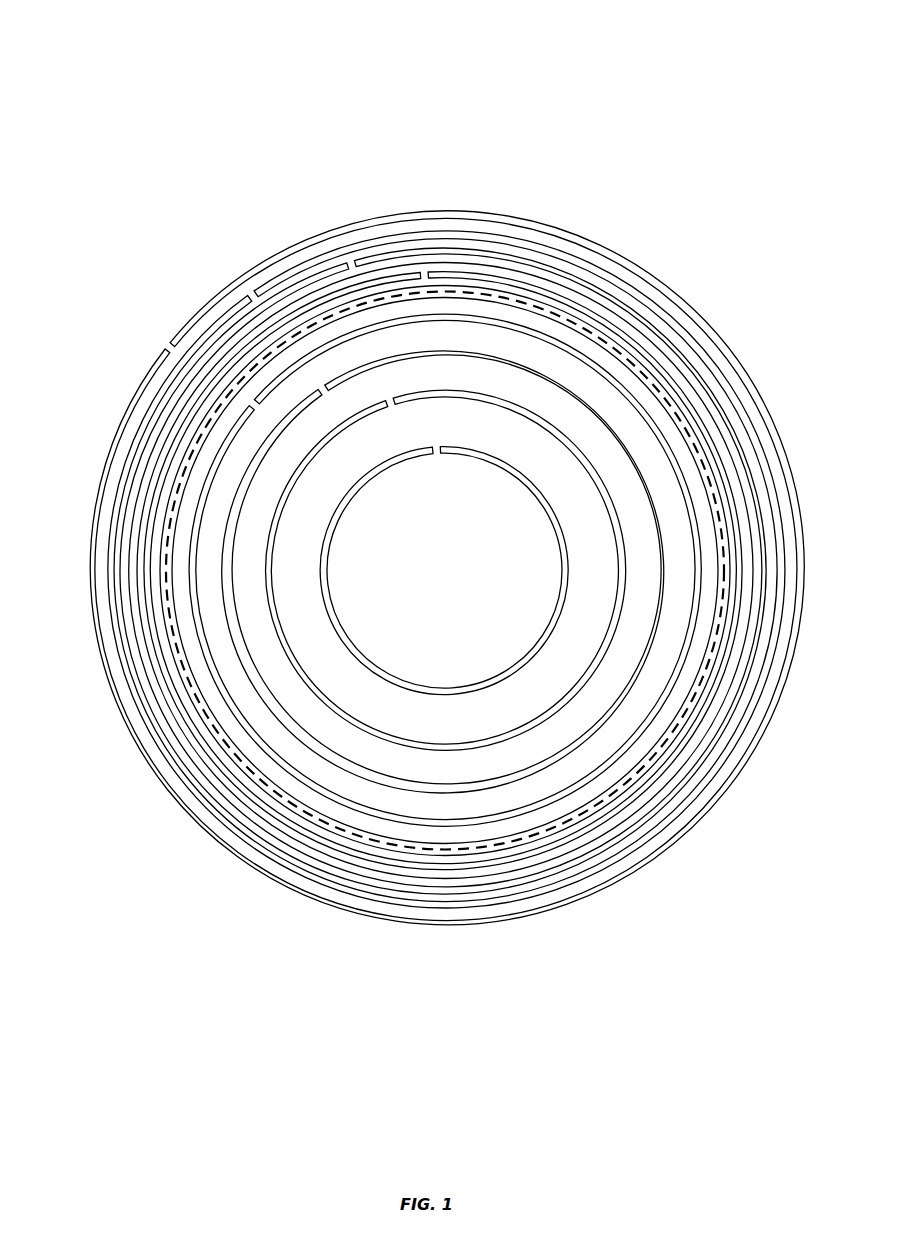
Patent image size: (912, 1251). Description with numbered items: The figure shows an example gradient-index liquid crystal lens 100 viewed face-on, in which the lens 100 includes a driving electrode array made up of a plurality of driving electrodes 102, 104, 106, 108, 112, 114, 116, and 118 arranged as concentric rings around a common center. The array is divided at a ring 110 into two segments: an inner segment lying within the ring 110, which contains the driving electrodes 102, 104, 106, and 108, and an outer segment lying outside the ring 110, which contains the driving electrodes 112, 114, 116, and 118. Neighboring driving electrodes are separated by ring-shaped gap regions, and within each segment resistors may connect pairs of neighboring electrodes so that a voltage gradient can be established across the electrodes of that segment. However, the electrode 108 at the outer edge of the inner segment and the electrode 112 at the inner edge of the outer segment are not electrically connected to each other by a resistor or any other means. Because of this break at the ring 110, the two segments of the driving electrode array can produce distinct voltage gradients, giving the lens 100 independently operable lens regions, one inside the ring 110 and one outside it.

The gradient-index liquid crystal lens 100 is at (100, 88).
The driving electrode 102 is at (555, 520).
The driving electrode 104 is at (492, 405).
The driving electrode 106 is at (447, 350).
The driving electrode 108 is at (390, 330).
The ring 110 is at (330, 310).
The driving electrode 112 is at (237, 352).
The driving electrode 114 is at (165, 428).
The driving electrode 116 is at (120, 470).
The driving electrode 118 is at (95, 548).